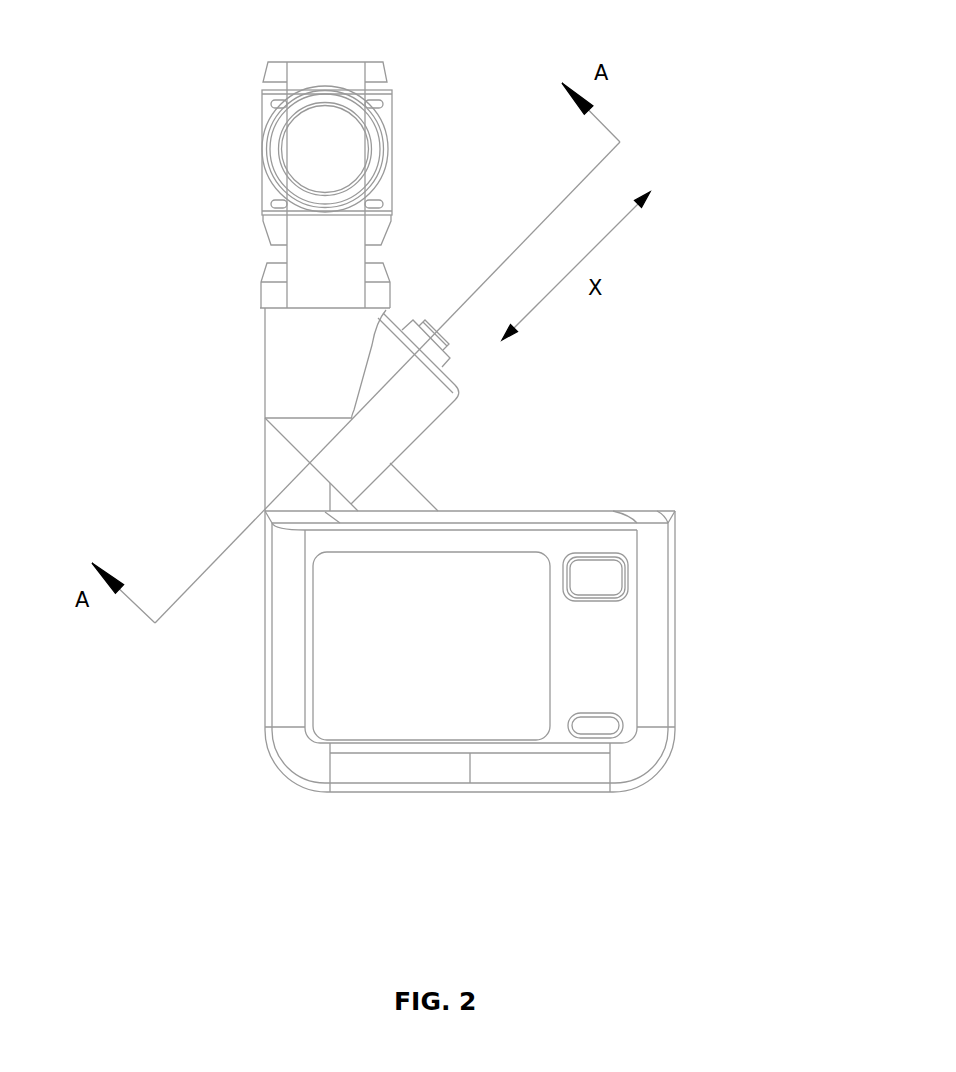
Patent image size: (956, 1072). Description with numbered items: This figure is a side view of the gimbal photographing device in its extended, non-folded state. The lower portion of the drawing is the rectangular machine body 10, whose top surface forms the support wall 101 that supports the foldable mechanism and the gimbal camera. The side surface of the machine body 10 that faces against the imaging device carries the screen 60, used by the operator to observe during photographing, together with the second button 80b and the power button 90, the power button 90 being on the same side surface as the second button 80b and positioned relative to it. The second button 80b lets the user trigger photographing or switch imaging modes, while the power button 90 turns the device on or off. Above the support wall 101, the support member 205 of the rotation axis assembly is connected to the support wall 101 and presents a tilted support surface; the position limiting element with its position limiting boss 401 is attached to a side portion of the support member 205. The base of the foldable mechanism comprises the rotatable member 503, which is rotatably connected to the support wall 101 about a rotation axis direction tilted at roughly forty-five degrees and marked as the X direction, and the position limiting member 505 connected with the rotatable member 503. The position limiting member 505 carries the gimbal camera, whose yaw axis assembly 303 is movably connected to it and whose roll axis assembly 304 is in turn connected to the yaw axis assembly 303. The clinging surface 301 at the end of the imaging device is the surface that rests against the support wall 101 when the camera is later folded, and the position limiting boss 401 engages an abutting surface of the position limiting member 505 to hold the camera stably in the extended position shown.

The machine body 10 is at (595, 667).
The screen 60 is at (463, 682).
The second button 80b is at (593, 578).
The power button 90 is at (590, 728).
The support wall 101 is at (595, 510).
The support member 205 is at (280, 462).
The clinging surface 301 is at (258, 133).
The yaw axis assembly 303 is at (375, 292).
The roll axis assembly 304 is at (317, 145).
The position limiting boss 401 is at (383, 493).
The rotatable member 503 is at (400, 420).
The position limiting member 505 is at (300, 367).